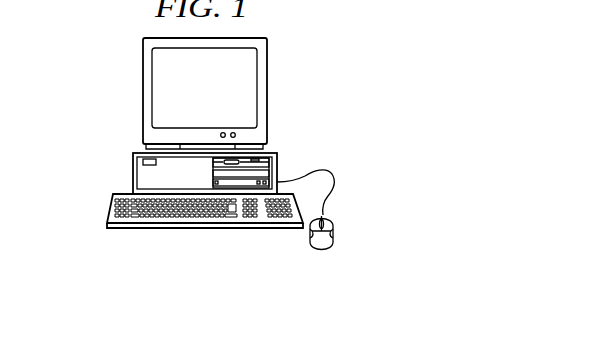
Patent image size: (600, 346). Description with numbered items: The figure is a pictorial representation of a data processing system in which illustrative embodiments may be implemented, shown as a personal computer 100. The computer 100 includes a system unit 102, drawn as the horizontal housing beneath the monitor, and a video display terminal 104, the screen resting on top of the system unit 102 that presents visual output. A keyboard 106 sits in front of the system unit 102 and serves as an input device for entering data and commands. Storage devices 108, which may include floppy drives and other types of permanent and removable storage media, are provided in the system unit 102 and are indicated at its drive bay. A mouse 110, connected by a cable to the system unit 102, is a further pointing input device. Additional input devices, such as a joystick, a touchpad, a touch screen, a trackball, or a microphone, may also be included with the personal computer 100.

The computer 100 is at (87, 77).
The system unit 102 is at (132, 167).
The video display terminal 104 is at (267, 90).
The keyboard 106 is at (127, 230).
The storage devices 108 is at (278, 166).
The mouse 110 is at (323, 252).